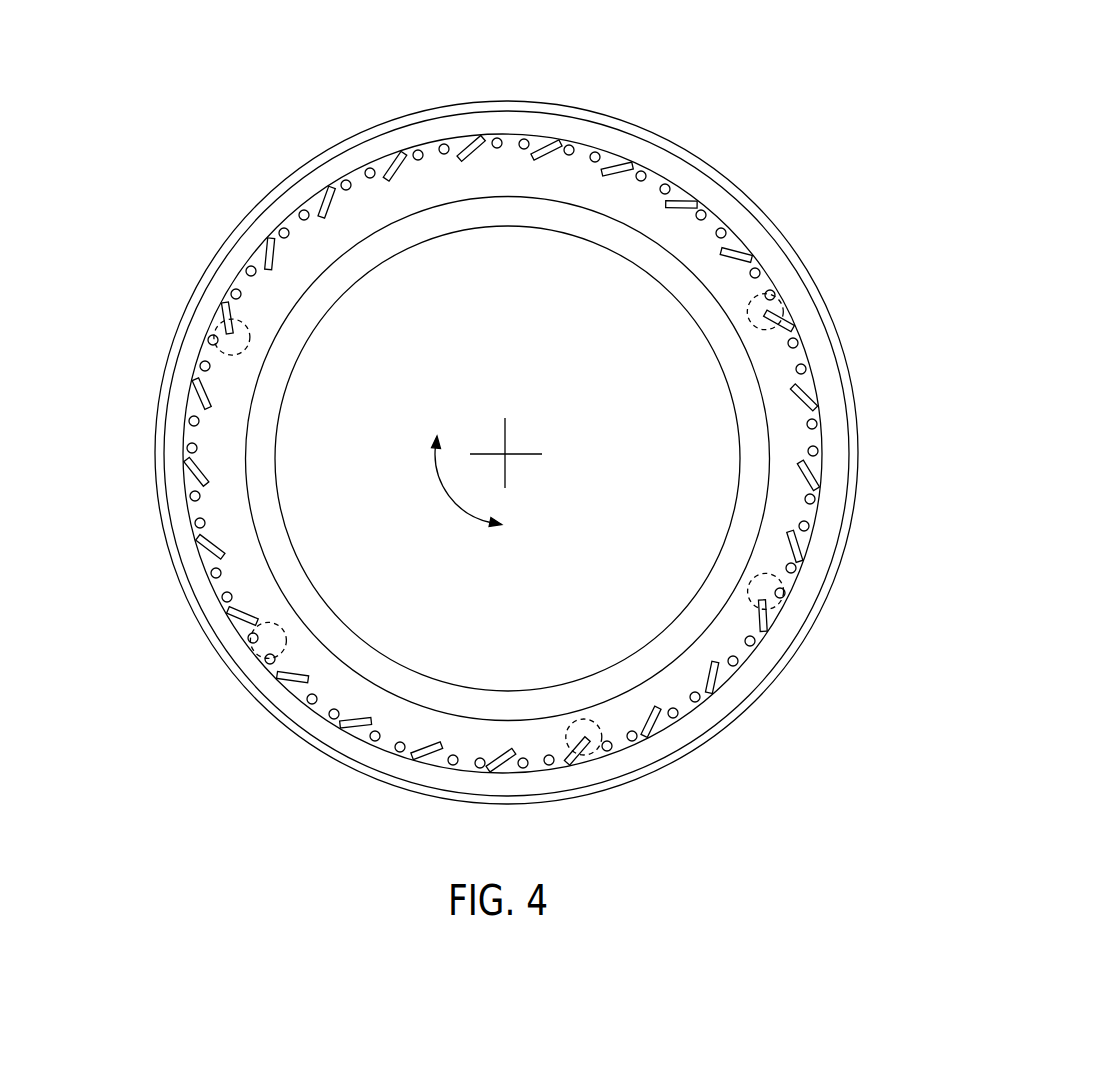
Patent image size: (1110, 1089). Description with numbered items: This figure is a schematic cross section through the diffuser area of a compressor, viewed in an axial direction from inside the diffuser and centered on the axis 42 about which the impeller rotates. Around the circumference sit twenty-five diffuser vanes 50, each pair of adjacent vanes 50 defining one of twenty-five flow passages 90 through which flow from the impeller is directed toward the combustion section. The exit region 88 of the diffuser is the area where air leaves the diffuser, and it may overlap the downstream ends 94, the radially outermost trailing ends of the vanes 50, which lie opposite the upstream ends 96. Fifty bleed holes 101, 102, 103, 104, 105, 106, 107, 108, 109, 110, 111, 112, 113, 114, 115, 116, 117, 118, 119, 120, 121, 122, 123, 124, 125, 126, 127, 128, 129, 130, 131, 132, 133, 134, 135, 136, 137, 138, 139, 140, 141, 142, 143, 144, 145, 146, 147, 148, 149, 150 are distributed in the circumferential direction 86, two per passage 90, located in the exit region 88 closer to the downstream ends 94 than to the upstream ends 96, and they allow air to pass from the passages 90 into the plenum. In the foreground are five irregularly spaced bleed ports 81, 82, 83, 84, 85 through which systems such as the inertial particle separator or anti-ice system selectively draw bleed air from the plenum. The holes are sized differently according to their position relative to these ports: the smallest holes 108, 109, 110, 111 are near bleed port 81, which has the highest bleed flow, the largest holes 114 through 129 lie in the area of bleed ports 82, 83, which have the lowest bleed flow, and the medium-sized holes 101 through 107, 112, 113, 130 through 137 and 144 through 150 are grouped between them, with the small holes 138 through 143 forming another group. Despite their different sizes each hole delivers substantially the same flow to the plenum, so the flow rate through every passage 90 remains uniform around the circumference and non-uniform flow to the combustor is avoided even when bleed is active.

The axis 42 is at (505, 452).
The diffuser vanes 50 is at (633, 163).
The bleed port 81 is at (750, 321).
The bleed port 82 is at (748, 587).
The bleed port 83 is at (575, 721).
The bleed port 84 is at (284, 632).
The bleed port 85 is at (249, 344).
The circumferential direction 86 is at (447, 494).
The exit region 88 is at (823, 541).
The flow passages 90 is at (805, 352).
The downstream ends 94 is at (170, 380).
The upstream ends 96 is at (249, 430).
The bleed hole 101 is at (495, 138).
The bleed hole 102 is at (523, 138).
The bleed hole 103 is at (567, 145).
The bleed hole 104 is at (596, 152).
The bleed hole 105 is at (636, 178).
The bleed hole 106 is at (661, 192).
The bleed hole 107 is at (698, 218).
The bleed hole 108 is at (718, 237).
The bleed hole 109 is at (759, 269).
The bleed hole 110 is at (774, 293).
The bleed hole 111 is at (788, 345).
The bleed hole 112 is at (806, 367).
The bleed hole 113 is at (806, 425).
The bleed hole 114 is at (817, 449).
The bleed hole 115 is at (804, 500).
The bleed hole 116 is at (809, 524).
The bleed hole 117 is at (795, 569).
The bleed hole 118 is at (784, 595).
The bleed hole 119 is at (754, 642).
The bleed hole 120 is at (737, 663).
The bleed hole 121 is at (700, 698).
The bleed hole 122 is at (677, 715).
The bleed hole 123 is at (631, 730).
The bleed hole 124 is at (611, 748).
The bleed hole 125 is at (551, 764).
The bleed hole 126 is at (520, 758).
The bleed hole 127 is at (481, 767).
The bleed hole 128 is at (451, 764).
The bleed hole 129 is at (401, 741).
The bleed hole 130 is at (373, 741).
The bleed hole 131 is at (331, 718).
The bleed hole 132 is at (307, 701).
The bleed hole 133 is at (265, 661).
The bleed hole 134 is at (248, 640).
The bleed hole 135 is at (222, 598).
The bleed hole 136 is at (220, 571).
The bleed hole 137 is at (195, 525).
The bleed hole 138 is at (190, 497).
The bleed hole 139 is at (187, 449).
The bleed hole 140 is at (188, 421).
The bleed hole 141 is at (209, 367).
The bleed hole 142 is at (208, 338).
The bleed hole 143 is at (240, 295).
The bleed hole 144 is at (246, 270).
The bleed hole 145 is at (288, 235).
The bleed hole 146 is at (298, 214).
The bleed hole 147 is at (341, 183).
The bleed hole 148 is at (366, 169).
The bleed hole 149 is at (414, 150).
The bleed hole 150 is at (442, 143).